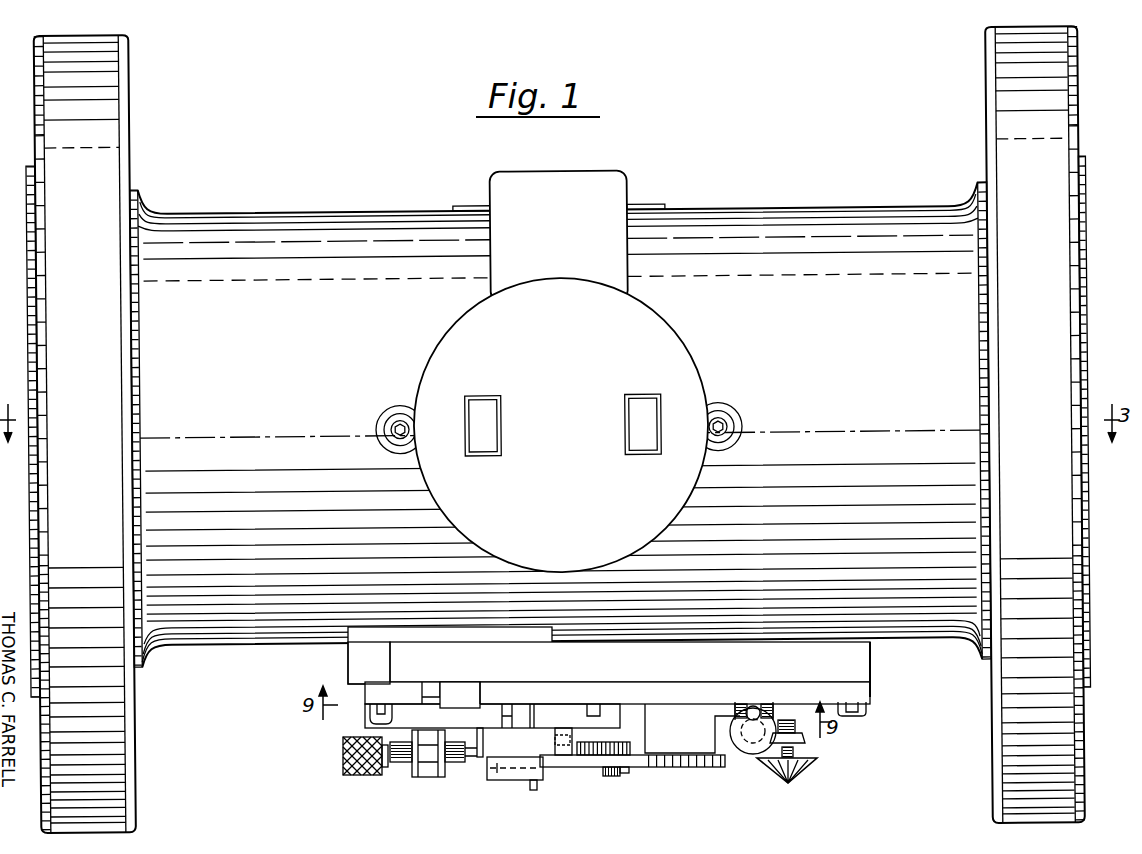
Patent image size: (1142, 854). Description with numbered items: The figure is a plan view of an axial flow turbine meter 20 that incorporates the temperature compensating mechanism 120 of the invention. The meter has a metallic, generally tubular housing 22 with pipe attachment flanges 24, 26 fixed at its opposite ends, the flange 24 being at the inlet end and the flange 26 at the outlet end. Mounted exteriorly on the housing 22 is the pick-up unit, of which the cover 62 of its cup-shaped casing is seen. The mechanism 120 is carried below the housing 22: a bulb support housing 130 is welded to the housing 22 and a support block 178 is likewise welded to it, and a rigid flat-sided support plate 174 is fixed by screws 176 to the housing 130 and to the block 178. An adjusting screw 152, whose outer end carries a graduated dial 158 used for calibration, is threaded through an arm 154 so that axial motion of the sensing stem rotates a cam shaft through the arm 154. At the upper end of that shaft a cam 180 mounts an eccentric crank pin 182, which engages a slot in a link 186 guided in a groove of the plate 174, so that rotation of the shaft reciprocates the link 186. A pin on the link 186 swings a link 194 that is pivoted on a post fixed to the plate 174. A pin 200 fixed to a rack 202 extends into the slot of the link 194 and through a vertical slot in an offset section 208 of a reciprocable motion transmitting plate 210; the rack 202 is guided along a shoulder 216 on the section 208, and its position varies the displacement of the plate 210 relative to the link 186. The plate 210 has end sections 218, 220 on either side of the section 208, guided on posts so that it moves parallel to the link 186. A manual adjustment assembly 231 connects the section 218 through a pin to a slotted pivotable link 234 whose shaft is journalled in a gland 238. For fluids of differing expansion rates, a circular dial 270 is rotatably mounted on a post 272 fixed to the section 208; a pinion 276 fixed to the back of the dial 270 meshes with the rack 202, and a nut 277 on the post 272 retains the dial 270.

The axial flow turbine meter 20 is at (206, 655).
The tubular housing 22 is at (962, 648).
The pipe attachment flange 24 is at (127, 776).
The pipe attachment flange 26 is at (1082, 775).
The cover 62 is at (675, 338).
The temperature compensating mechanism 120 is at (601, 739).
The bulb support housing 130 is at (870, 645).
The adjusting screw 152 is at (805, 768).
The arm 154 is at (800, 742).
The dial 158 is at (785, 785).
The support plate 174 is at (870, 684).
The screws 176 is at (370, 715).
The support block 178 is at (358, 679).
The cam 180 is at (735, 745).
The eccentric crank pin 182 is at (752, 705).
The link 186 is at (730, 715).
The link 194 is at (598, 705).
The pin 200 is at (562, 735).
The rack 202 is at (565, 767).
The offset section 208 is at (520, 704).
The motion transmitting plate 210 is at (480, 735).
The shoulder 216 is at (533, 790).
The end section 218 is at (413, 775).
The end section 220 is at (692, 712).
The manual adjustment assembly 231 is at (357, 778).
The pivotable link 234 is at (440, 696).
The gland 238 is at (362, 663).
The dial 270 is at (660, 758).
The post 272 is at (613, 777).
The pinion 276 is at (596, 770).
The nut 277 is at (626, 771).